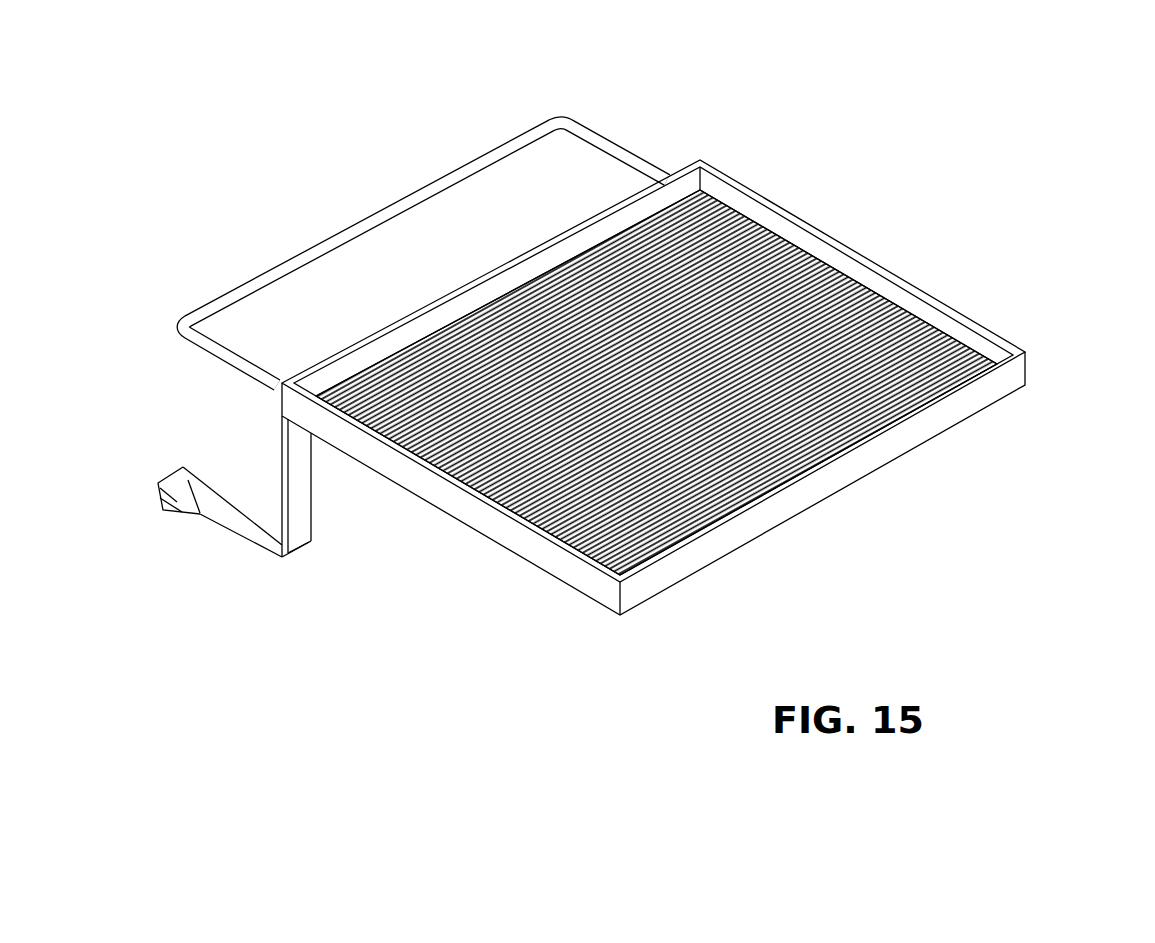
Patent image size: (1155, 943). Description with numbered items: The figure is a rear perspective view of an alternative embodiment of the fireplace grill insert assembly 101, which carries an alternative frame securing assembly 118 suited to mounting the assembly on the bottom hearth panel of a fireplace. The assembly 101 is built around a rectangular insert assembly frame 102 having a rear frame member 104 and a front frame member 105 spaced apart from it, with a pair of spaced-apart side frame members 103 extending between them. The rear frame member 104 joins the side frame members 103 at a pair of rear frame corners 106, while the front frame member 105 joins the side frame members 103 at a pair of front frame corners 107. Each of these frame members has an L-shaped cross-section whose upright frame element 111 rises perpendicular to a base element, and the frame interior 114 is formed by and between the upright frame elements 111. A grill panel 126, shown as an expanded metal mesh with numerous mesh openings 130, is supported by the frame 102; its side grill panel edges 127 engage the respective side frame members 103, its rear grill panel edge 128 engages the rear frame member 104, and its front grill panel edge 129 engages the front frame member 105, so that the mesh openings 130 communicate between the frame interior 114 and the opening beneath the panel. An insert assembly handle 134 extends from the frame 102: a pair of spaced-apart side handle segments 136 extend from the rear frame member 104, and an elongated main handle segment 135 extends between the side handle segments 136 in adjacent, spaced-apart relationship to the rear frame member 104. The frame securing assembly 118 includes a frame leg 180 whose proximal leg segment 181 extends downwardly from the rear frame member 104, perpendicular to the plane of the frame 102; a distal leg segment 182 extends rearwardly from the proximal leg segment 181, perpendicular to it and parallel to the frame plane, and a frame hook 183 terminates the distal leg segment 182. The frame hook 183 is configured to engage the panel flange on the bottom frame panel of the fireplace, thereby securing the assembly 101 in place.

The fireplace grill insert assembly 101 is at (414, 90).
The insert assembly frame 102 is at (970, 292).
The side frame member 103 is at (890, 250).
The rear frame member 104 is at (524, 249).
The front frame member 105 is at (860, 490).
The rear frame corner 106 is at (702, 158).
The front frame corner 107 is at (995, 382).
The upright frame element 111 is at (1003, 338).
The frame interior 114 is at (767, 214).
The frame securing assembly 118 is at (306, 572).
The grill panel 126 is at (872, 244).
The side grill panel edge 127 is at (893, 305).
The rear grill panel edge 128 is at (453, 323).
The front grill panel edge 129 is at (915, 422).
The mesh opening 130 is at (762, 505).
The insert assembly handle 134 is at (346, 222).
The main handle segment 135 is at (517, 140).
The side handle segment 136 is at (656, 152).
The frame leg 180 is at (312, 478).
The proximal leg segment 181 is at (295, 470).
The distal leg segment 182 is at (247, 538).
The frame hook 183 is at (147, 494).